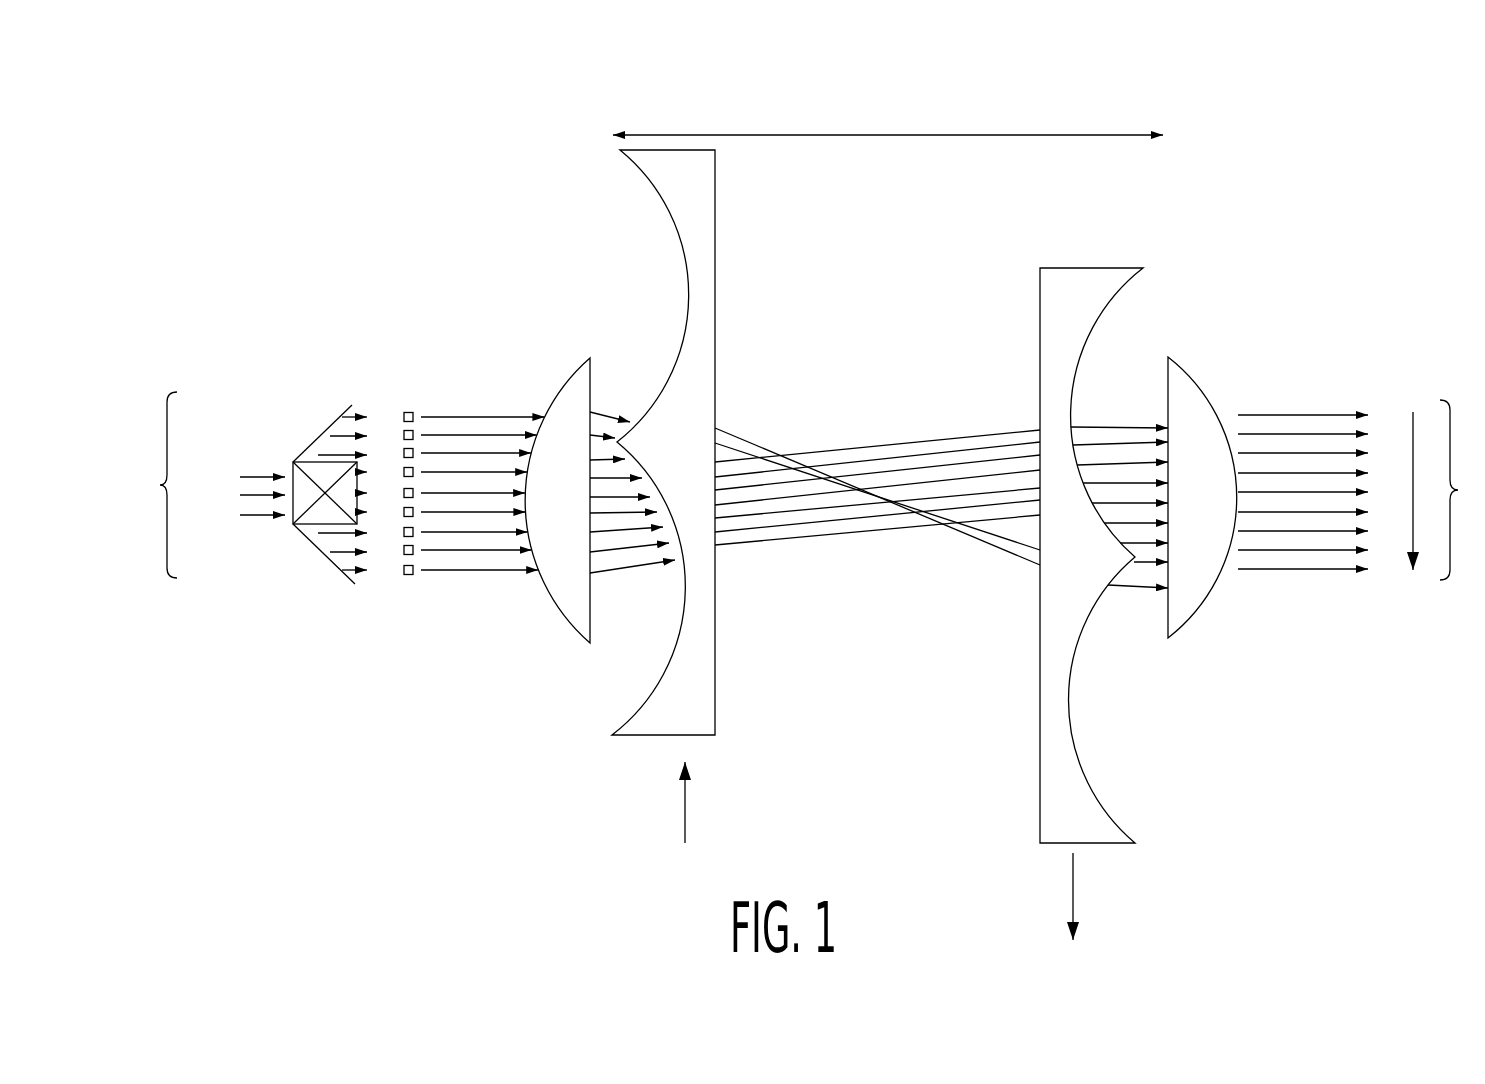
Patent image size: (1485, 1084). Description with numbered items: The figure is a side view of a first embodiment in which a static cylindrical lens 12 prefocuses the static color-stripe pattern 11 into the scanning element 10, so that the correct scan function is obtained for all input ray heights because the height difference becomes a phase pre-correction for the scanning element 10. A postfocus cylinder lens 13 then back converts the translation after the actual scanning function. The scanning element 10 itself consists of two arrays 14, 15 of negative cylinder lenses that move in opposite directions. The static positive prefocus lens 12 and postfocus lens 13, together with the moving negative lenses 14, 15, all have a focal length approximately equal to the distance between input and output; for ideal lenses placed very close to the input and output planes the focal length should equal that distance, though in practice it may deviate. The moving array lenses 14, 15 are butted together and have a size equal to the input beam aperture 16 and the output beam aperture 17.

The scanning element 10 is at (1037, 128).
The static color-stripe pattern 11 is at (483, 412).
The static cylindrical lens 12 is at (572, 625).
The postfocus cylinder lens 13 is at (1194, 614).
The array of negative cylinder lenses 14 is at (715, 716).
The array of negative cylinder lenses 15 is at (1039, 804).
The input beam aperture 16 is at (284, 530).
The output beam aperture 17 is at (1361, 477).